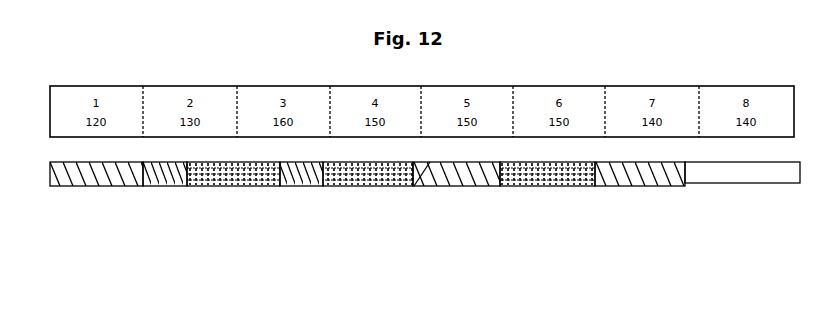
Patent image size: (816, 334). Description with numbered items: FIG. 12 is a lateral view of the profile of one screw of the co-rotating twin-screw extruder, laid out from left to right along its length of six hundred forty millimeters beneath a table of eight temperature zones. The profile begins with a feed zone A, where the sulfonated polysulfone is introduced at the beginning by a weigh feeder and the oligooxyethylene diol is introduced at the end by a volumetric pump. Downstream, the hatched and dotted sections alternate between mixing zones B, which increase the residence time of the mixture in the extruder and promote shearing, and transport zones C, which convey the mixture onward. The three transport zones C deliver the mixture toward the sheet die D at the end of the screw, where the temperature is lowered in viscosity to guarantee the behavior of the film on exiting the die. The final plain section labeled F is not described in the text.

The feed zone A is at (75, 223).
The mixing zone B is at (173, 223).
The transport zone C is at (273, 222).
The sheet die D is at (540, 232).
The plain strip segment F is at (730, 220).